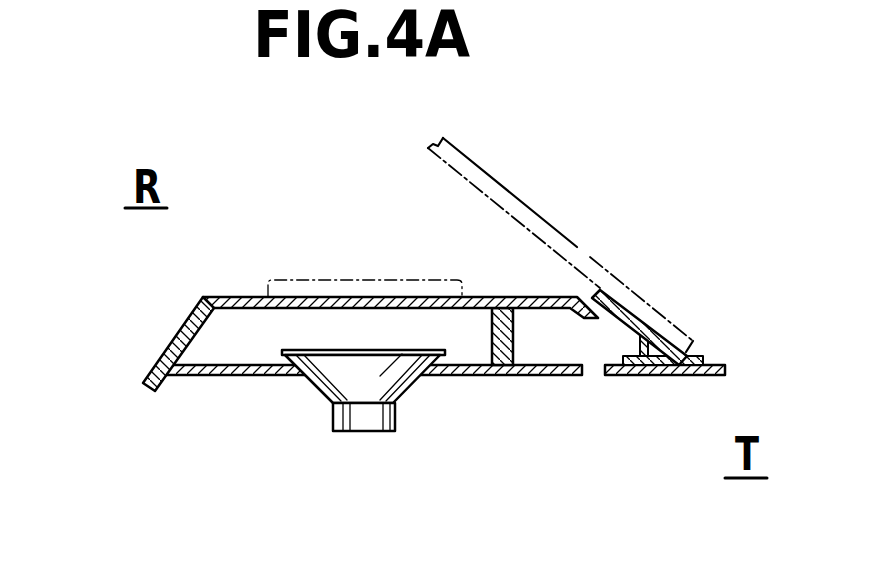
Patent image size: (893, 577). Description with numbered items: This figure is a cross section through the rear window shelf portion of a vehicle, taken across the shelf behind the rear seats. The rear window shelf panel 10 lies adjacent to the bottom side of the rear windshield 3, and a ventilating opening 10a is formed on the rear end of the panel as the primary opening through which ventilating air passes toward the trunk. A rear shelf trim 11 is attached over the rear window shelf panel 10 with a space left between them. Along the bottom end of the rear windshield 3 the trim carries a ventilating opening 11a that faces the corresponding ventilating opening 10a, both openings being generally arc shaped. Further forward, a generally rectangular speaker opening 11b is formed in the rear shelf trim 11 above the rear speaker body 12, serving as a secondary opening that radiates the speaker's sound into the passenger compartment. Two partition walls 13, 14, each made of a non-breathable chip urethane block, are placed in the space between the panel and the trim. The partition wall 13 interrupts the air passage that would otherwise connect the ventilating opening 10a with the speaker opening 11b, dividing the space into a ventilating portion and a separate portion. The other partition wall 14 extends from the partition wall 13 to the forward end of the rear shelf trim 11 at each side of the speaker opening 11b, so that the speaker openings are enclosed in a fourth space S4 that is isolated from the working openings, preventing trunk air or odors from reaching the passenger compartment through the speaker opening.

The rear windshield 3 is at (645, 297).
The rear window shelf panel 10 is at (548, 377).
The ventilating opening 10a is at (605, 377).
The rear shelf trim 11 is at (188, 332).
The ventilating opening 11a is at (586, 296).
The speaker opening 11b is at (276, 297).
The rear speaker body 12 is at (375, 419).
The partition wall 13 is at (498, 332).
The partition wall 14 is at (225, 342).
The fourth space S4 is at (358, 322).